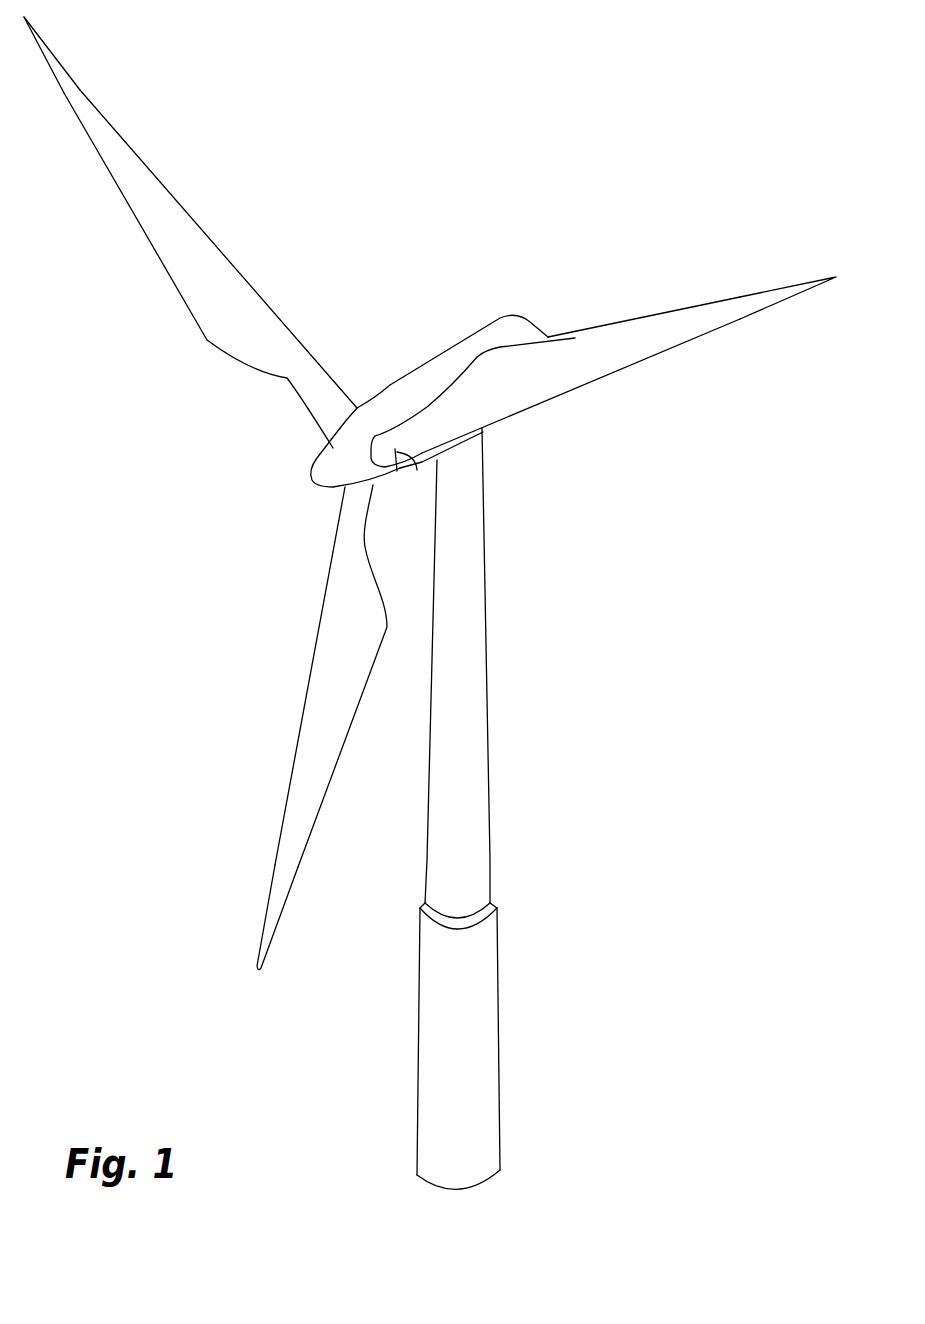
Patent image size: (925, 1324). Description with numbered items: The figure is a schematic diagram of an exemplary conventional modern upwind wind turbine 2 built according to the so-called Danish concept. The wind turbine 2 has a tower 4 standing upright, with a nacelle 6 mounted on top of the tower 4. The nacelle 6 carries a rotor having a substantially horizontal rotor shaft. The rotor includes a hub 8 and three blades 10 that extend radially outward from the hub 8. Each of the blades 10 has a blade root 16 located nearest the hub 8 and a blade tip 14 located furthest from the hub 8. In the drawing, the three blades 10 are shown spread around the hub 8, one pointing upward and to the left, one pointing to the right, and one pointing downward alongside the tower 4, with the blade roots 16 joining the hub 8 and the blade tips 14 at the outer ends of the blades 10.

The wind turbine 2 is at (430, 603).
The tower 4 is at (477, 673).
The nacelle 6 is at (423, 378).
The hub 8 is at (332, 463).
The blades 10 is at (220, 313).
The blade tip 14 is at (66, 71).
The blade root 16 is at (340, 434).